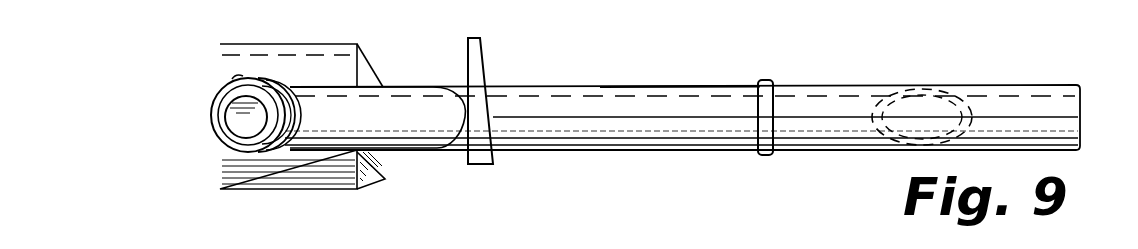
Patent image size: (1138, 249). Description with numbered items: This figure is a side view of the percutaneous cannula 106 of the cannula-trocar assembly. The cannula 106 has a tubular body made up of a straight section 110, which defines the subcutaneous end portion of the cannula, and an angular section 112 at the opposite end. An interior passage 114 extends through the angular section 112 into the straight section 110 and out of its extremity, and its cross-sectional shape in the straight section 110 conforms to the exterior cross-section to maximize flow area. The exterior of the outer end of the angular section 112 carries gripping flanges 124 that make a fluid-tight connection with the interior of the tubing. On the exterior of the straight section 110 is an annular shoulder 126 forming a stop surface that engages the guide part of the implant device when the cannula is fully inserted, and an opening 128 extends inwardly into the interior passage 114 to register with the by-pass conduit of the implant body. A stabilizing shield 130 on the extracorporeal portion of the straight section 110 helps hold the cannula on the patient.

The percutaneous cannula 106 is at (610, 85).
The straight section 110 is at (678, 84).
The angular section 112 is at (372, 128).
The interior passage 114 is at (234, 130).
The gripping flanges 124 is at (242, 77).
The annular shoulder 126 is at (775, 79).
The opening 128 is at (946, 98).
The stabilizing shield 130 is at (480, 58).